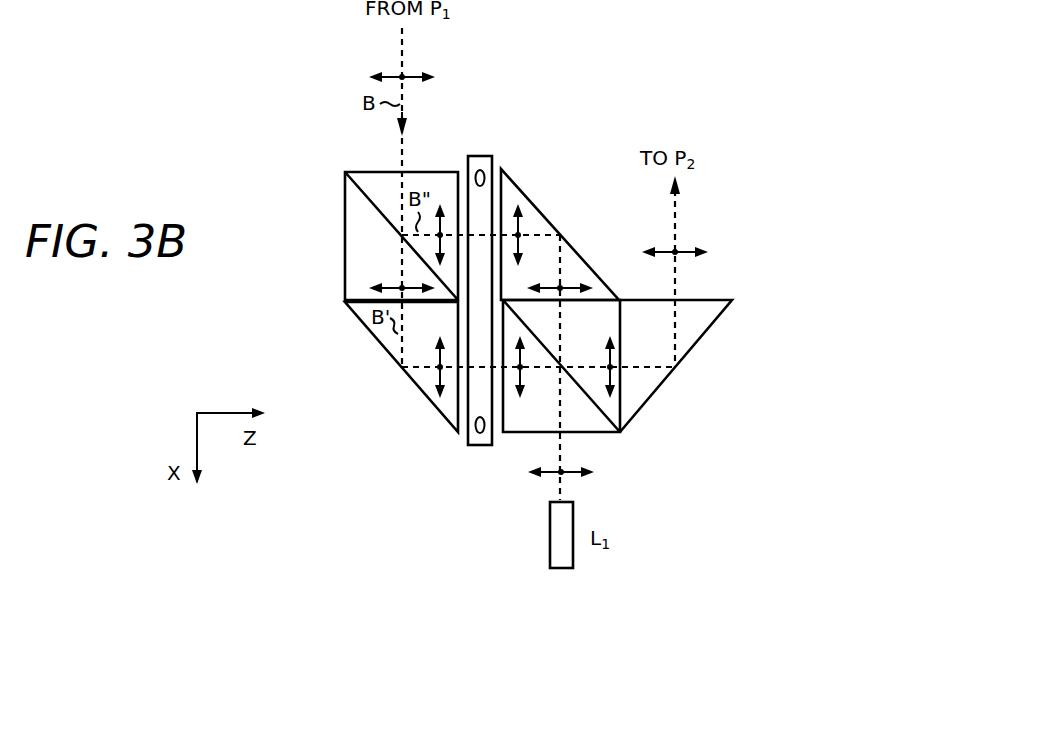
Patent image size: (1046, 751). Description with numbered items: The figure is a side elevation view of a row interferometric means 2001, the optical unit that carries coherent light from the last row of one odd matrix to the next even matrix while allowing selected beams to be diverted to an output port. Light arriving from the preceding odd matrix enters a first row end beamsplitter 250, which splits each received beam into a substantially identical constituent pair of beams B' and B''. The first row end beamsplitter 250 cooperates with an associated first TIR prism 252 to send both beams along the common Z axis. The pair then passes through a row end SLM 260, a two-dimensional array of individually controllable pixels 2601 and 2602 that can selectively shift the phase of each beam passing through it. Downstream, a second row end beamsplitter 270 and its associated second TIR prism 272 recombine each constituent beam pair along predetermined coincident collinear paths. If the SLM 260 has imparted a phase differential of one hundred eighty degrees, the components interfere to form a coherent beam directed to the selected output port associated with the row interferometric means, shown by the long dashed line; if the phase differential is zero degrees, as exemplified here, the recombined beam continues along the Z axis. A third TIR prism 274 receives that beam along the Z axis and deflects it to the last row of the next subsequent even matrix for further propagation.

The row interferometric means 2001 is at (543, 158).
The first row end beamsplitter 250 is at (376, 182).
The first TIR prism 252 is at (415, 378).
The row end SLM 260 is at (491, 462).
The individually controllable pixel 2601 is at (472, 151).
The individually controllable pixel 2602 is at (472, 446).
The second row end beamsplitter 270 is at (593, 420).
The second TIR prism 272 is at (572, 258).
The third TIR prism 274 is at (698, 336).